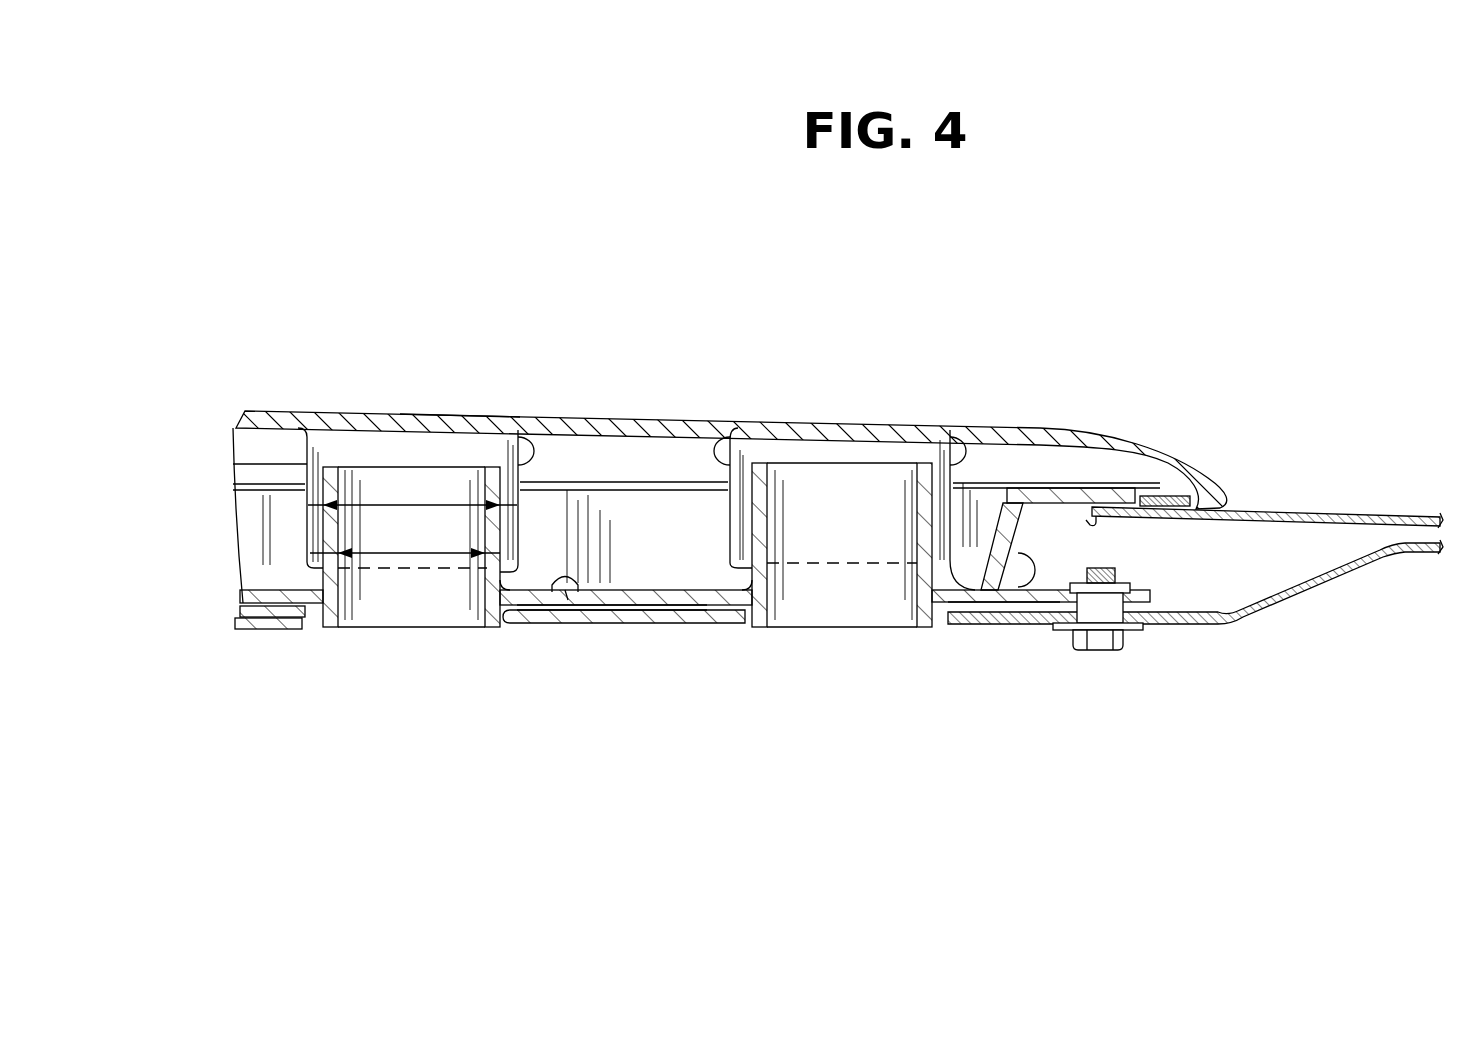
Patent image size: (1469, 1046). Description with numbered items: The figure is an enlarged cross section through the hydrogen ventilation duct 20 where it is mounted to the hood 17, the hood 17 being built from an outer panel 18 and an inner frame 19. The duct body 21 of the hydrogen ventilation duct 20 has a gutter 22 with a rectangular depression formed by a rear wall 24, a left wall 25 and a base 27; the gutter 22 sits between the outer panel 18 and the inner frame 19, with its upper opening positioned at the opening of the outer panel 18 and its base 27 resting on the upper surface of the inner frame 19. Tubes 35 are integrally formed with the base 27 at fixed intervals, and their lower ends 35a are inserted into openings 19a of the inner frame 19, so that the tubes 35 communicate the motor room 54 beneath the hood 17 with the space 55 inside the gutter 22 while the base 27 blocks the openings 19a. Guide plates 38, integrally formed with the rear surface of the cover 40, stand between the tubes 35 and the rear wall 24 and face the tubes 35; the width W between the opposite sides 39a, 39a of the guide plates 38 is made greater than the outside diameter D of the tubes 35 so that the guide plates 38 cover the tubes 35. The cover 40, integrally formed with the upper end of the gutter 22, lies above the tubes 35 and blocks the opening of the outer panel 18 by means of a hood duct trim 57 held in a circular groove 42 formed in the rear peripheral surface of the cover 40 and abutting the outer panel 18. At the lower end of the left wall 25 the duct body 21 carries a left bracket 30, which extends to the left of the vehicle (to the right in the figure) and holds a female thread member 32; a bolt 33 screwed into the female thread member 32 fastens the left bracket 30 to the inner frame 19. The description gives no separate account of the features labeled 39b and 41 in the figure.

The hood 17 is at (1312, 372).
The outer panel 18 is at (1332, 511).
The inner frame 19 is at (1383, 547).
The openings of the inner frame 19a is at (510, 628).
The hydrogen ventilation duct 20 is at (1112, 268).
The duct body 21 is at (641, 405).
The gutter 22 is at (1040, 483).
The rear wall 24 is at (663, 570).
The left wall 25 is at (1028, 603).
The base 27 is at (570, 600).
The left bracket 30 is at (1183, 610).
The female thread member 32 is at (1125, 612).
The bolt 33 is at (1103, 651).
The tube 35 is at (330, 430).
The lower end of the tube 35a is at (330, 630).
The guide plate 38 is at (273, 628).
The opposite sides of the guide plate 39a is at (307, 464).
The seal bead 39b is at (524, 436).
The cover 40 is at (455, 412).
The partition wall 41 is at (678, 455).
The circular groove 42 is at (1190, 532).
The motor room 54 is at (745, 852).
The space inside the gutter 55 is at (603, 513).
The hood duct trim 57 is at (1172, 498).